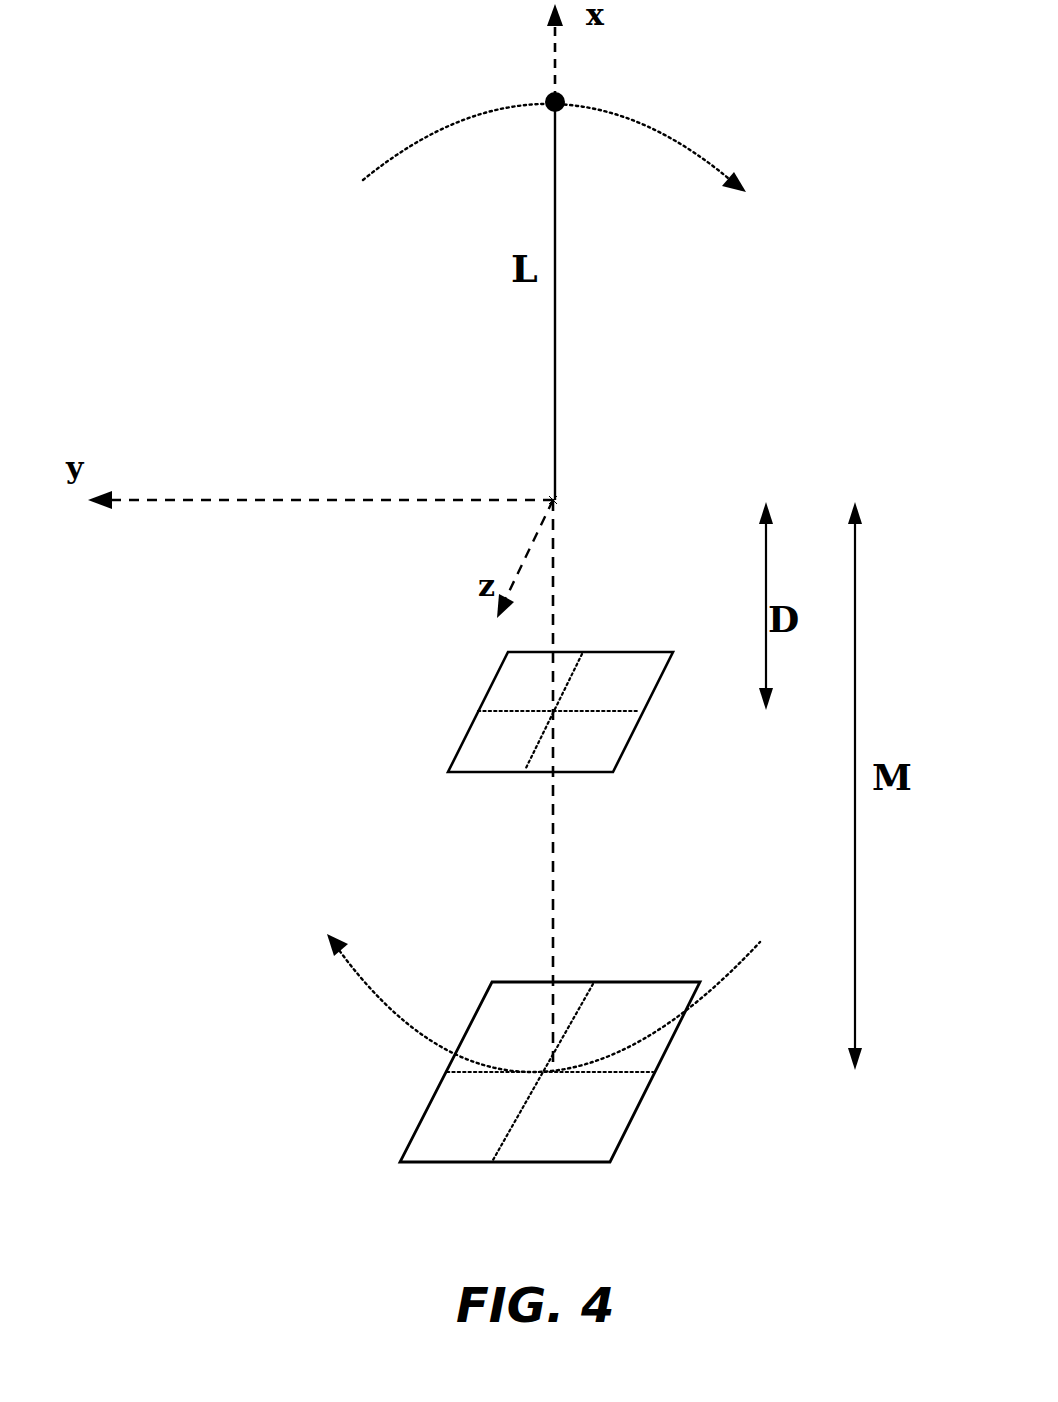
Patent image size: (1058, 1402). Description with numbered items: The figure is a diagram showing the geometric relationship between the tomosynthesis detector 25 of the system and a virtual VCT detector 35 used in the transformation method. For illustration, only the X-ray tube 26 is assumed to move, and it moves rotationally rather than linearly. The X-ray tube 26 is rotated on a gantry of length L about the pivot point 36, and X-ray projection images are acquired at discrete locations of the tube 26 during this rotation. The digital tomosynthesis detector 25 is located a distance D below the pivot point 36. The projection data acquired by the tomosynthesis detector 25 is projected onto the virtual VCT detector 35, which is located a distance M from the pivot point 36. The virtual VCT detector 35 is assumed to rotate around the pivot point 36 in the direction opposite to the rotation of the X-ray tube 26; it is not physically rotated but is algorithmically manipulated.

The X-ray tube 26 is at (572, 116).
The pivot point 36 is at (570, 499).
The tomosynthesis detector 25 is at (432, 760).
The virtual VCT detector 35 is at (392, 1135).